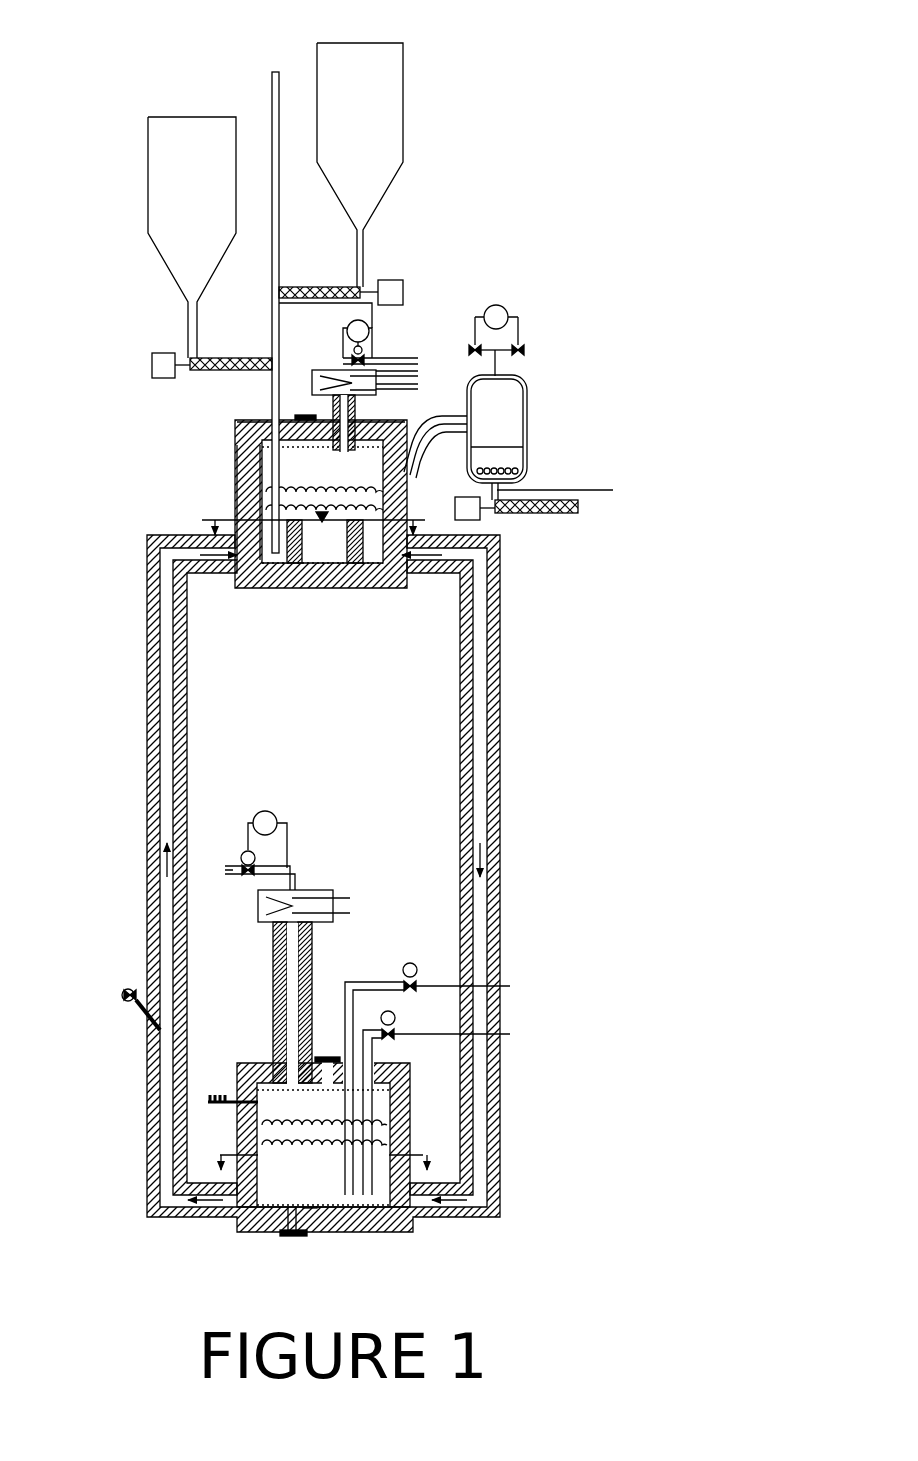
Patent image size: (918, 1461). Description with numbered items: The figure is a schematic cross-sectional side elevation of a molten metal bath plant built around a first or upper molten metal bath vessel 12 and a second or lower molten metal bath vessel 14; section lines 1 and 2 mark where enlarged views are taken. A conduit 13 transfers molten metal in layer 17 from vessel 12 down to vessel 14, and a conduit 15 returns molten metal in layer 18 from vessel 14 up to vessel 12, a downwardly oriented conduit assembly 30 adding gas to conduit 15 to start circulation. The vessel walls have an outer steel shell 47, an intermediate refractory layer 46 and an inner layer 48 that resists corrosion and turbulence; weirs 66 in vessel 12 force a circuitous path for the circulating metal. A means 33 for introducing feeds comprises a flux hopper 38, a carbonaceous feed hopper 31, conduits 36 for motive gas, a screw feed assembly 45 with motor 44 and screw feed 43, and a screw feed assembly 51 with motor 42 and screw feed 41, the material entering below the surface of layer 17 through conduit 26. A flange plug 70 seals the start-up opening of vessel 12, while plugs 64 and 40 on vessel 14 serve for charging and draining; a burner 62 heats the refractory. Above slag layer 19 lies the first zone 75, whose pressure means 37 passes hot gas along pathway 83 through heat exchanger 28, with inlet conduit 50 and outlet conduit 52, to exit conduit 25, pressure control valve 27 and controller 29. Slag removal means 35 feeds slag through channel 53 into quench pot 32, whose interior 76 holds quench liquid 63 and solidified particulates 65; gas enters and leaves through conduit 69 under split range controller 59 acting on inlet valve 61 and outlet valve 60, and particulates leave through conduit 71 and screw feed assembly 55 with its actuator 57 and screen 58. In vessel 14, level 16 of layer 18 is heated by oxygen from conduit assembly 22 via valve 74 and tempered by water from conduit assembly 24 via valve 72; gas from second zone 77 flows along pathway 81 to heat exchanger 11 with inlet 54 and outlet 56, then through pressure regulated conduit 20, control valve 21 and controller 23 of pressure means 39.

The section line 1- 1 is at (317, 515).
The section line 2- 2 is at (322, 1146).
The heat exchanger 11 is at (289, 904).
The first or upper molten metal bath vessel 12 is at (250, 493).
The conduit 13 is at (507, 850).
The second or lower molten metal bath vessel 14 is at (300, 1105).
The conduit 15 is at (142, 852).
The liquid level 16 is at (324, 1133).
The molten metal layer 17 is at (325, 541).
The molten metal layer 18 is at (323, 1184).
The slag layer 19 is at (324, 503).
The pressure regulated conduit 20 is at (298, 879).
The control valve 21 is at (241, 857).
The conduit assembly 22 is at (456, 1094).
The pressure controller 23 is at (256, 812).
The conduit assembly 24 is at (446, 1065).
The exit conduit 25 is at (416, 357).
The conduit 26 is at (272, 397).
The pressure control valve 27 is at (367, 357).
The heat exchanger 28 is at (378, 378).
The pressure controller 29 is at (369, 330).
The conduit assembly 30 is at (124, 988).
The carbonaceous feed hopper 31 is at (148, 178).
The quench pot 32 is at (528, 433).
The means for introducing carbonaceous feeds, slag components, and gaseous component 33 is at (391, 185).
The means for removing slag components 35 is at (528, 382).
The conduit 36 is at (237, 290).
The means for controlling pressure in vessel 12 37 is at (334, 396).
The flux hopper 38 is at (403, 97).
The means for controlling pressure in vessel 14 39 is at (307, 848).
The removable flange plug 40 is at (292, 1237).
The screw feed 41 is at (232, 358).
The motor 42 is at (152, 364).
The screw feed 43 is at (311, 287).
The motor 44 is at (403, 290).
The screw feed assembly 45 is at (380, 255).
The intermediate refractory layer 46 is at (237, 440).
The outer steel layer or shell 47 is at (237, 492).
The inner layer 48 is at (237, 472).
The inlet conduit 50 is at (418, 370).
The screw feed assembly 51 is at (174, 278).
The outlet conduit 52 is at (435, 440).
The channel 53 is at (411, 468).
The inlet conduit 54 is at (339, 890).
The screw feed assembly 55 is at (476, 883).
The outlet conduit 56 is at (339, 917).
The actuator 57 is at (528, 513).
The screen 58 is at (467, 520).
The split range pressure valve controller 59 is at (506, 310).
The outlet valve 60 is at (526, 350).
The valve 61 is at (471, 349).
The burner 62 is at (222, 1093).
The quench liquid 63 is at (516, 450).
The removable flange plug 64 is at (328, 1056).
The solidified particulates 65 is at (525, 476).
The weirs 66 is at (320, 578).
The conduit 69 is at (498, 367).
The flange plug 70 is at (298, 415).
The conduit 71 is at (573, 495).
The valve 72 is at (410, 962).
The valve 74 is at (390, 1011).
The first zone 75 is at (322, 480).
The vessel interior 76 is at (495, 407).
The second zone 77 is at (323, 1144).
The pathway 81 is at (293, 1020).
The pathway 83 is at (345, 441).